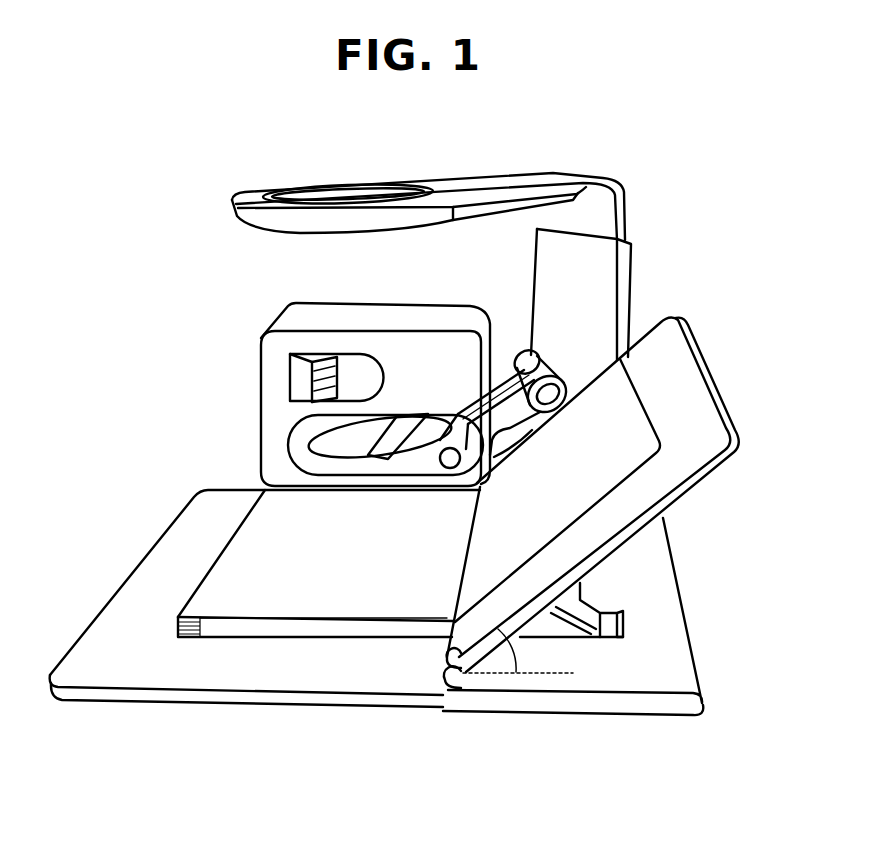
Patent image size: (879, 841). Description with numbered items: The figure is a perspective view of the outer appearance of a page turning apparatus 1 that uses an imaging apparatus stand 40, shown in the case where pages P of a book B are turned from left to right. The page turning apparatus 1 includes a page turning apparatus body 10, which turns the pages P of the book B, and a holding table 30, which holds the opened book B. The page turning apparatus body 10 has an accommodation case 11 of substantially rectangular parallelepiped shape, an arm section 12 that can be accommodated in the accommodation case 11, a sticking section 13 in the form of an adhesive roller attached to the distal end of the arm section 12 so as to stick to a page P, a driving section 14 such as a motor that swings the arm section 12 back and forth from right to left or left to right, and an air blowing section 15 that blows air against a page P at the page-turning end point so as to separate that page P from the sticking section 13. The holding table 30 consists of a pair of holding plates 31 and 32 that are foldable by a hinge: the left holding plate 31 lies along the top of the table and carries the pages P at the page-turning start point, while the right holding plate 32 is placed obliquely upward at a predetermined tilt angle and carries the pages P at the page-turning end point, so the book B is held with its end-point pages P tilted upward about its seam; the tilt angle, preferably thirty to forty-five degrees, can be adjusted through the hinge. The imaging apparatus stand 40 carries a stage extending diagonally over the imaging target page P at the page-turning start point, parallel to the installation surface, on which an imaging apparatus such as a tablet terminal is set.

The page turning apparatus 1 is at (183, 229).
The page turning apparatus body 10 is at (452, 305).
The accommodation case 11 is at (283, 311).
The arm section 12 is at (478, 403).
The sticking section 13 is at (548, 376).
The driving section 14 is at (445, 417).
The air blowing section 15 is at (290, 378).
The holding table 30 is at (677, 639).
The holding plate 31 is at (227, 705).
The holding plate 32 is at (735, 450).
The imaging apparatus stand 40 is at (550, 174).
The book B is at (237, 522).
The page P is at (210, 603).